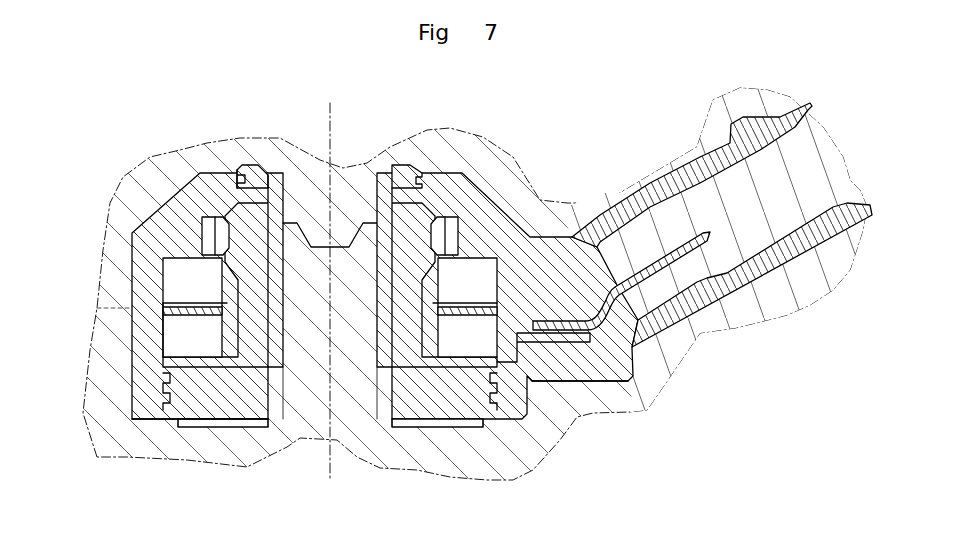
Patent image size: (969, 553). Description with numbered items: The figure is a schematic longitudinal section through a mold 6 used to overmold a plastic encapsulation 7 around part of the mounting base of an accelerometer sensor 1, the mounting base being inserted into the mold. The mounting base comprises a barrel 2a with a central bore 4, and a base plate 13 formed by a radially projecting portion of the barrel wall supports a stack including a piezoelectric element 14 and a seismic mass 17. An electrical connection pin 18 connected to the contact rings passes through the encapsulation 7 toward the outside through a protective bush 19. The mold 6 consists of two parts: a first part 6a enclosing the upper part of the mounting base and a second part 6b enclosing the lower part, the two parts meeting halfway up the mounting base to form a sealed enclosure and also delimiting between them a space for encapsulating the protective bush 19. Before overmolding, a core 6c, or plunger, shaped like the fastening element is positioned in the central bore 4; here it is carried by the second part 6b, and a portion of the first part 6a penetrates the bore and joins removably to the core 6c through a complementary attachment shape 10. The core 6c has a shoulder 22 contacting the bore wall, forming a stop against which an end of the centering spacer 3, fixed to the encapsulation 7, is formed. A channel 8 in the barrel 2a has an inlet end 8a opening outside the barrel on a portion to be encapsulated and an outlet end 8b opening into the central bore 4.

The accelerometer sensor 1 is at (223, 432).
The barrel 2a is at (253, 317).
The spacer 3 is at (385, 289).
The central bore 4 is at (392, 313).
The mold 6 is at (100, 325).
The first part of the mold 6a is at (595, 203).
The second part of the mold 6b is at (737, 230).
The core 6c is at (322, 302).
The encapsulation 7 is at (172, 238).
The channel 8 is at (253, 193).
The inlet end 8a is at (237, 193).
The outlet end 8b is at (268, 193).
The attachment shape 10 is at (333, 240).
The base plate 13 is at (200, 402).
The piezoelectric element 14 is at (190, 337).
The seismic mass 17 is at (180, 278).
The electrical connection pin 18 is at (686, 242).
The protective bush 19 is at (787, 243).
The shoulder 22 is at (385, 375).